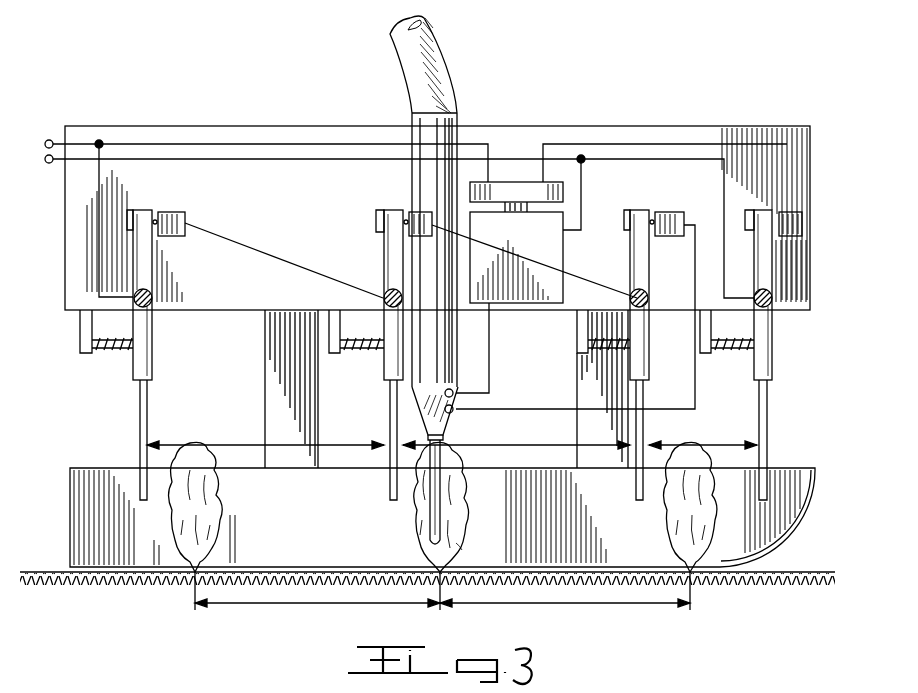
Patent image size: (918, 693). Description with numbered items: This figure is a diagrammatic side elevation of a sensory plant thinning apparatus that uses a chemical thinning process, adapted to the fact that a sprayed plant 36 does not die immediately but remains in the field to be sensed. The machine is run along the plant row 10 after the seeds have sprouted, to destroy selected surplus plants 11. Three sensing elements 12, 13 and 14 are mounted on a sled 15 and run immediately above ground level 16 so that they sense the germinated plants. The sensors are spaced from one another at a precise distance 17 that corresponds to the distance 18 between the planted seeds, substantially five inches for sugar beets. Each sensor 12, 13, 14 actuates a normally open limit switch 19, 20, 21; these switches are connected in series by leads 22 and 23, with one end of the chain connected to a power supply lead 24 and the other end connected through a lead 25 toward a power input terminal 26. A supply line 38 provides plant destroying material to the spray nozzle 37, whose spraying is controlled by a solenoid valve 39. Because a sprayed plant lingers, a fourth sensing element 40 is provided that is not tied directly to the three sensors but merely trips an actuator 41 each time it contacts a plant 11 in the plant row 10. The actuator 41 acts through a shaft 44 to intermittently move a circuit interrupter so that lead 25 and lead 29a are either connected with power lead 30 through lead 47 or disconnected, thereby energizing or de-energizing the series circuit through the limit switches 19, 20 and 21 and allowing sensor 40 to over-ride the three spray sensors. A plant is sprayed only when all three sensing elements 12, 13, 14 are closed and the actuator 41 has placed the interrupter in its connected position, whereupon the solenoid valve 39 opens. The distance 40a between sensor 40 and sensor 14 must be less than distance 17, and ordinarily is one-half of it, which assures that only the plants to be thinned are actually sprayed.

The plant row 10 is at (800, 572).
The plants 11 is at (208, 457).
The sensing element 12 is at (148, 420).
The sensing element 13 is at (389, 412).
The sensing element 14 is at (648, 396).
The sled 15 is at (757, 126).
The ground level 16 is at (50, 570).
The distance 17 is at (242, 445).
The distance 18 is at (314, 613).
The limit switch 19 is at (187, 212).
The limit switch 20 is at (409, 213).
The limit switch 21 is at (668, 202).
The lead 22 is at (267, 253).
The lead 23 is at (594, 272).
The power supply lead 24 is at (50, 140).
The lead 25 is at (490, 341).
The power input terminal 26 is at (453, 391).
The lead 29a is at (524, 409).
The power supply lead 30 is at (49, 163).
The plant 36 is at (460, 547).
The spray nozzle 37 is at (428, 520).
The supply line 38 is at (454, 80).
The solenoid valve 39 is at (446, 428).
The fourth sensing element 40 is at (769, 416).
The distance 40a is at (712, 441).
The actuator 41 is at (532, 182).
The shaft 44 is at (527, 208).
The lead 47 is at (584, 194).